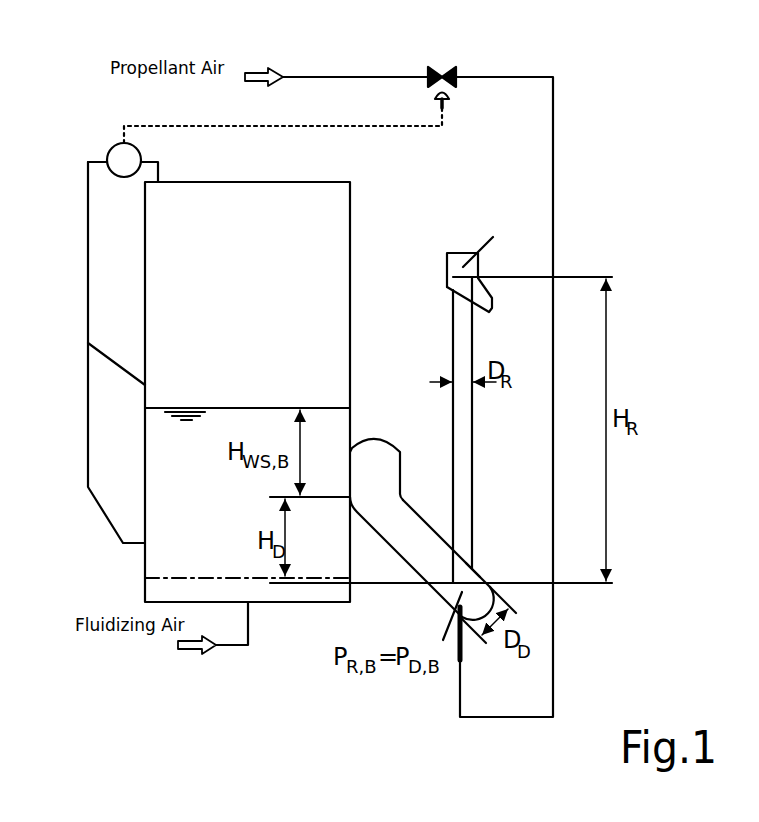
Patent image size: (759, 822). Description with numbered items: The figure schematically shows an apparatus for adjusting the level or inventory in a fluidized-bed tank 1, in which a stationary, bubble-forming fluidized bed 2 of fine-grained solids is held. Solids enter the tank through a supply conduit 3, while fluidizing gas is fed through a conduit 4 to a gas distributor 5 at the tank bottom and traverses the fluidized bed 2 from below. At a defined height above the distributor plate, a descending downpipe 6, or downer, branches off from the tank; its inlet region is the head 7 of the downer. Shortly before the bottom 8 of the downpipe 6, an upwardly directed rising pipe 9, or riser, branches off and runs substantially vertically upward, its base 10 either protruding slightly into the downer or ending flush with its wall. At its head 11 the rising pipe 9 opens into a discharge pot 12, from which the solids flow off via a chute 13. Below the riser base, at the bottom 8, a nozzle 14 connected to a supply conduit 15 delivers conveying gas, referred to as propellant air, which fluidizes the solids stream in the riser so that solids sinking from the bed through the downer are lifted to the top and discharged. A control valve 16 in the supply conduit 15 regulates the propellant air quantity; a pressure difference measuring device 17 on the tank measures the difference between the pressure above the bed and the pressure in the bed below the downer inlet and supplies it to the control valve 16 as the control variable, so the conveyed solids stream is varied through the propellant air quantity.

The fluidized-bed tank 1 is at (143, 250).
The fluidized bed 2 is at (218, 413).
The supply conduit 3 is at (118, 363).
The conduit 4 is at (231, 647).
The gas distributor 5 is at (302, 603).
The downpipe 6 is at (395, 518).
The head of the downer 7 is at (360, 489).
The bottom of the downer 8 is at (484, 600).
The rising pipe 9 is at (465, 445).
The base of the riser 10 is at (477, 573).
The head of the riser 11 is at (473, 277).
The discharge pot 12 is at (452, 249).
The chute 13 is at (488, 307).
The nozzle 14 is at (457, 648).
The supply conduit 15 is at (553, 163).
The control valve 16 is at (447, 70).
The pressure difference measuring device 17 is at (112, 144).